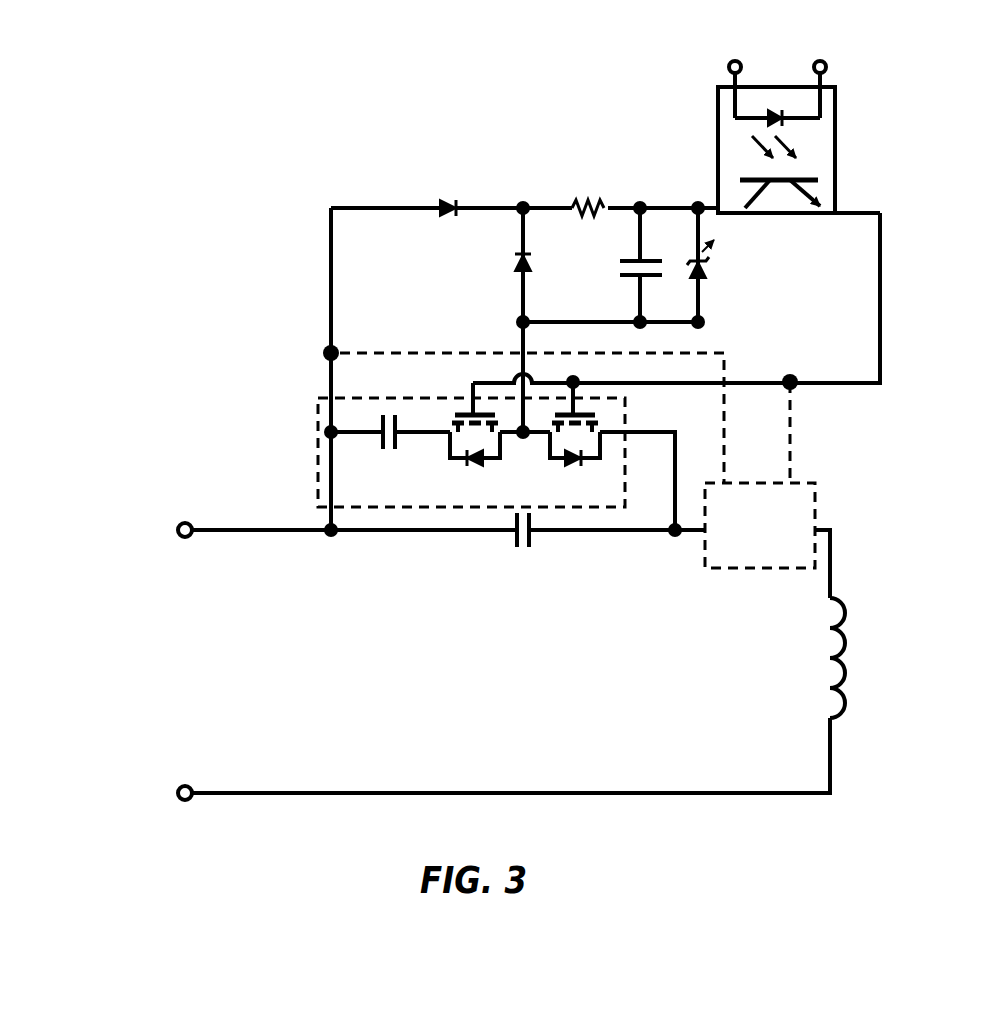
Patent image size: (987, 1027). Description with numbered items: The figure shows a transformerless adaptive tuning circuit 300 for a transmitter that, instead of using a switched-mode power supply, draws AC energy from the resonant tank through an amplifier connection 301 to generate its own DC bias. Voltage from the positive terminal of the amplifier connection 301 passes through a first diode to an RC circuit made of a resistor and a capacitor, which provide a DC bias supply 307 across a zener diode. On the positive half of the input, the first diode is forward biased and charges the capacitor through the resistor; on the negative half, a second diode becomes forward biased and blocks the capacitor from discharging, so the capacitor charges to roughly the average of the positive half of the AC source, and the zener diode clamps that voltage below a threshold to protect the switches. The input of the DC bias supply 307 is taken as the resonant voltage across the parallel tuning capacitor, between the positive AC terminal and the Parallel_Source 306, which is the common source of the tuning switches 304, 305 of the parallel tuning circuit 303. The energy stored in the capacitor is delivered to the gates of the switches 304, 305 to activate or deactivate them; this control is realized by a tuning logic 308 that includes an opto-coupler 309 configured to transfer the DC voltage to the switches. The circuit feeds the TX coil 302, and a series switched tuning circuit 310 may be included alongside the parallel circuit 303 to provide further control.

The transformerless adaptive tuning circuit 300 is at (98, 248).
The amplifier connection 301 is at (155, 662).
The TX coil 302 is at (896, 658).
The parallel tuning circuit 303 is at (438, 430).
The tuning switch 304 is at (445, 427).
The tuning switch 305 is at (587, 473).
The Parallel_Source 306 is at (530, 445).
The DC bias supply 307 is at (722, 266).
The tuning logic 308 is at (810, 73).
The opto-coupler 309 is at (844, 150).
The series switched tuning circuit 310 is at (760, 475).